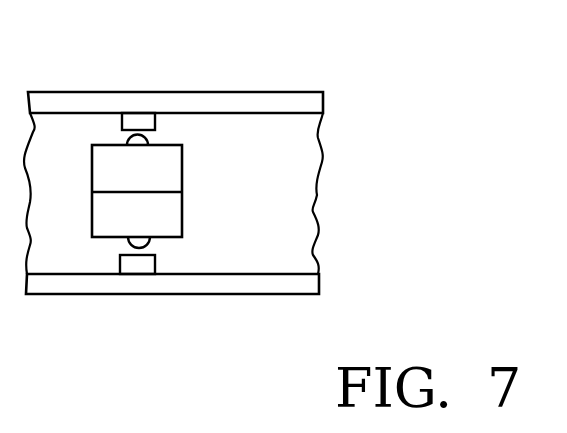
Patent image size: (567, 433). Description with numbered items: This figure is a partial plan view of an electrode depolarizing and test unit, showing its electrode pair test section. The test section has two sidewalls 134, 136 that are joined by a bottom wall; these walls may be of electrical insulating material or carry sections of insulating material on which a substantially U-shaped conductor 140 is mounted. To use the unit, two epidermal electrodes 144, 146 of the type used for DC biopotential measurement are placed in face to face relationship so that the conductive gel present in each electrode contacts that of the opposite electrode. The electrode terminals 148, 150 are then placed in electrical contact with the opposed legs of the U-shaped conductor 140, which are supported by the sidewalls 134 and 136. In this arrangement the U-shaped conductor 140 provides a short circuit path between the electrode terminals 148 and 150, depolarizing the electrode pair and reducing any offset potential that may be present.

The sidewall 134 is at (281, 100).
The sidewall 136 is at (237, 280).
The U-shaped conductor 140 is at (137, 118).
The epidermal electrode 144 is at (170, 177).
The epidermal electrode 146 is at (170, 205).
The electrode terminal 148 is at (149, 142).
The electrode terminal 150 is at (122, 245).